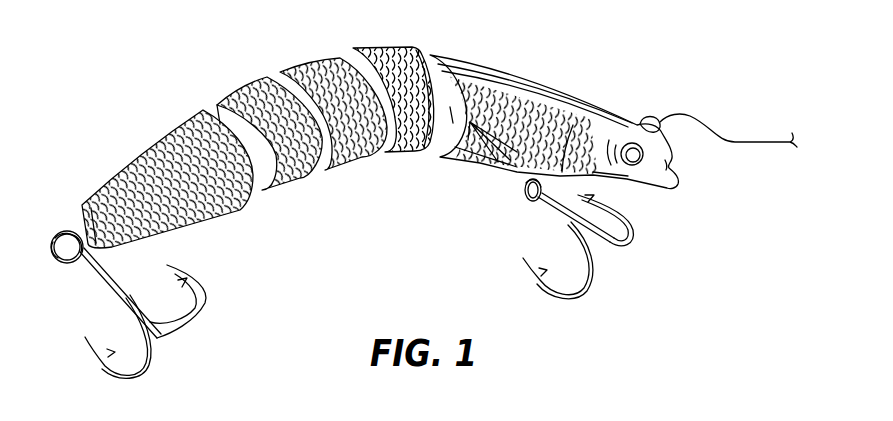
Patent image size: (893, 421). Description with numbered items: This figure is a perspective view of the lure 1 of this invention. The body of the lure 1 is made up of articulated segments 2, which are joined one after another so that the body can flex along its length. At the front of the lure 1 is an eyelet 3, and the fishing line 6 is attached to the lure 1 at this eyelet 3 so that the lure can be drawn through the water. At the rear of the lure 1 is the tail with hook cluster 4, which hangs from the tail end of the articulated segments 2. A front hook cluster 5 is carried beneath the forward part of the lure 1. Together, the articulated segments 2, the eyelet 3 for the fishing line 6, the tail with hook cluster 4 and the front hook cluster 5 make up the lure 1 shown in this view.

The lure 1 is at (583, 37).
The articulated segments 2 is at (343, 155).
The eyelet 3 is at (615, 122).
The tail with hook cluster 4 is at (95, 270).
The front hook cluster 5 is at (603, 247).
The fishing line 6 is at (748, 140).